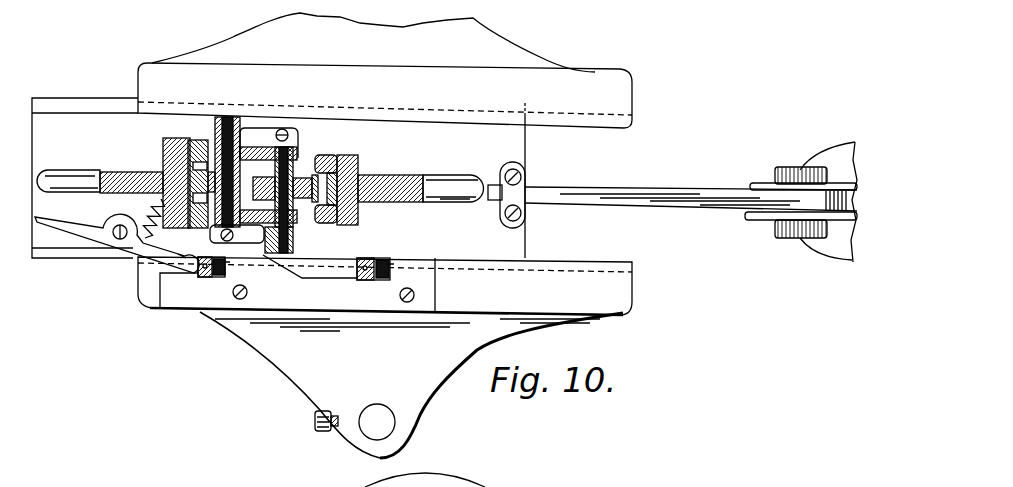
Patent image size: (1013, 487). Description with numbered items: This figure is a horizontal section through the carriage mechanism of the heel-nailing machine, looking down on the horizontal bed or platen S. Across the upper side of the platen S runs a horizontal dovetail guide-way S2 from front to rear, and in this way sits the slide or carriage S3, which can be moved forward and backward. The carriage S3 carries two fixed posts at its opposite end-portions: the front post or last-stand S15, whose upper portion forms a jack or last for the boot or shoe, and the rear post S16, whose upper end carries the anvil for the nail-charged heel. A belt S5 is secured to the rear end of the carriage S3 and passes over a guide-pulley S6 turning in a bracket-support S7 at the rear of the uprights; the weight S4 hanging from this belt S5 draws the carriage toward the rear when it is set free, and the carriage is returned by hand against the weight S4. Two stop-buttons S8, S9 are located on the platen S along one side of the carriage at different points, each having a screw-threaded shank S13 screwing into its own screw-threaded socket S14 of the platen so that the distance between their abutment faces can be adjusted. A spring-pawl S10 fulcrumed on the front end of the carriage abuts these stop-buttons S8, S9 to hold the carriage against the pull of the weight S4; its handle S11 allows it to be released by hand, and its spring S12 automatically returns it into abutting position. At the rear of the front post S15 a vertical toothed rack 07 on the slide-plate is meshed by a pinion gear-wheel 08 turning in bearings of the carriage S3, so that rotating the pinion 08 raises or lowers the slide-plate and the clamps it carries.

The horizontal bed or platen S is at (387, 250).
The horizontal dovetail guide-way S2 is at (150, 115).
The slide or carriage S3 is at (216, 178).
The weight S4 is at (828, 202).
The belt S5 is at (640, 205).
The guide-pulley S6 is at (764, 186).
The bracket-support S7 is at (799, 170).
The stop-button S8 is at (208, 277).
The stop-button S9 is at (370, 280).
The spring-pawl S10 is at (166, 253).
The handle S11 is at (117, 241).
The spring S12 is at (148, 220).
The screw-threaded shank S13 is at (226, 273).
The screw-threaded socket S14 is at (226, 256).
The front post or last-stand S15 is at (143, 173).
The rear post S16 is at (421, 183).
The vertical toothed rack 07 is at (190, 185).
The pinion gear-wheel 08 is at (264, 185).